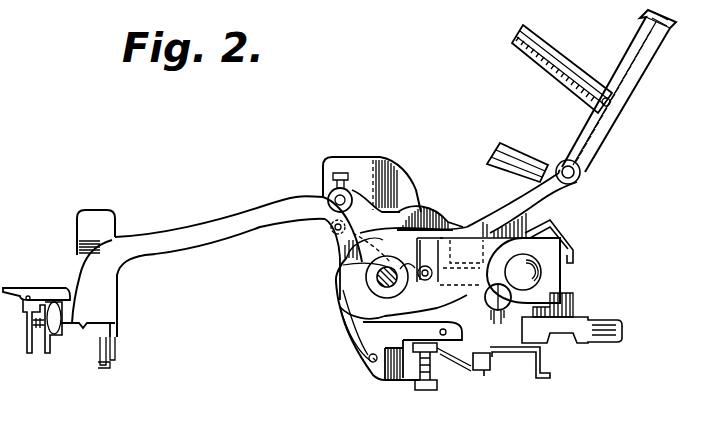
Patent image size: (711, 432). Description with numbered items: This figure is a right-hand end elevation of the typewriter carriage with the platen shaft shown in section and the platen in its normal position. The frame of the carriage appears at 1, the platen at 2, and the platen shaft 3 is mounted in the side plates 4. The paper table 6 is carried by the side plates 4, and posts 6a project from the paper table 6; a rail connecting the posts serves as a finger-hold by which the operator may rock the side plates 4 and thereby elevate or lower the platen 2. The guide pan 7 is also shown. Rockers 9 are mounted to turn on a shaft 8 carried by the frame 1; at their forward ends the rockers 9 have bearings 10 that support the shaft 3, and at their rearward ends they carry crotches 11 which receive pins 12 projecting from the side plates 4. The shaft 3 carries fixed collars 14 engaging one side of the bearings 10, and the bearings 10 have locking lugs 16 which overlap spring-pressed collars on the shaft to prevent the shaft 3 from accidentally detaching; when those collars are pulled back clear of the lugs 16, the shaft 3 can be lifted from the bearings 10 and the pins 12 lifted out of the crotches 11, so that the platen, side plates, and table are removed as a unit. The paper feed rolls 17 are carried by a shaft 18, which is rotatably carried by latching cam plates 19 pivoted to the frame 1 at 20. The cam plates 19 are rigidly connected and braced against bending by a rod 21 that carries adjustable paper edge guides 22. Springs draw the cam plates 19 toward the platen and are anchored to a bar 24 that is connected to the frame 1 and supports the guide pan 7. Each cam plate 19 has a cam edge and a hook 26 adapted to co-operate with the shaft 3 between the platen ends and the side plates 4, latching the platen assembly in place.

The frame 1 is at (223, 233).
The platen 2 is at (334, 290).
The platen shaft 3 is at (377, 276).
The side plates 4 is at (390, 288).
The paper table 6 is at (625, 72).
The posts 6a is at (553, 60).
The guide pan 7 is at (407, 381).
The shaft 8 is at (490, 306).
The rockers 9 is at (557, 193).
The bearings 10 is at (358, 302).
The crotches 11 is at (580, 183).
The pins 12 is at (577, 167).
The fixed collars 14 is at (366, 258).
The locking lugs 16 is at (407, 268).
The paper compression or feed rolls 17 is at (323, 213).
The shaft 18 is at (330, 232).
The latching cam plates 19 is at (418, 204).
The pivot 20 is at (370, 362).
The rod 21 is at (326, 193).
The adjustable paper edge guides 22 is at (385, 165).
The bar 24 is at (477, 373).
The hooks 26 is at (442, 222).